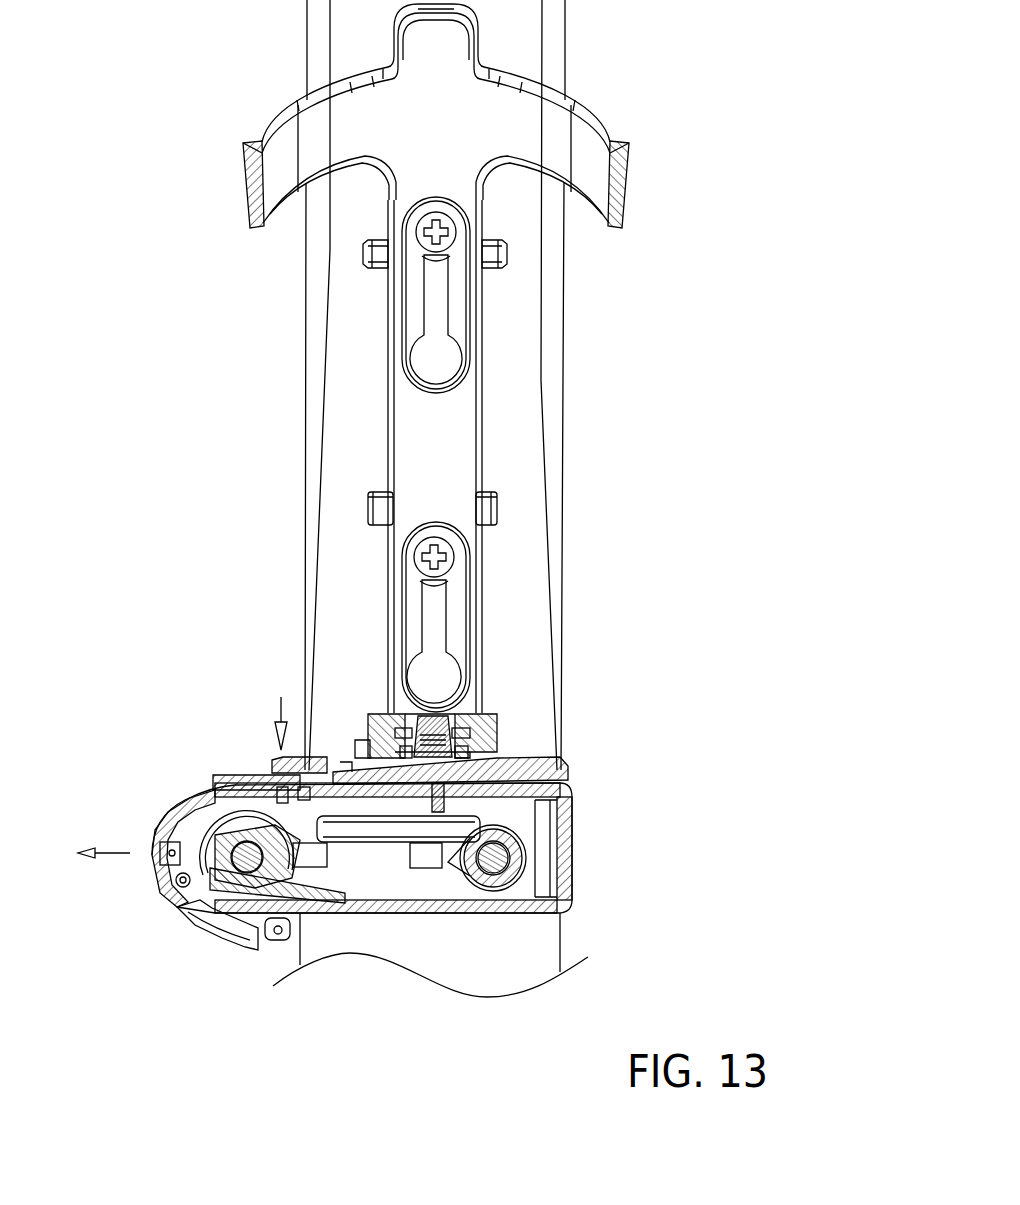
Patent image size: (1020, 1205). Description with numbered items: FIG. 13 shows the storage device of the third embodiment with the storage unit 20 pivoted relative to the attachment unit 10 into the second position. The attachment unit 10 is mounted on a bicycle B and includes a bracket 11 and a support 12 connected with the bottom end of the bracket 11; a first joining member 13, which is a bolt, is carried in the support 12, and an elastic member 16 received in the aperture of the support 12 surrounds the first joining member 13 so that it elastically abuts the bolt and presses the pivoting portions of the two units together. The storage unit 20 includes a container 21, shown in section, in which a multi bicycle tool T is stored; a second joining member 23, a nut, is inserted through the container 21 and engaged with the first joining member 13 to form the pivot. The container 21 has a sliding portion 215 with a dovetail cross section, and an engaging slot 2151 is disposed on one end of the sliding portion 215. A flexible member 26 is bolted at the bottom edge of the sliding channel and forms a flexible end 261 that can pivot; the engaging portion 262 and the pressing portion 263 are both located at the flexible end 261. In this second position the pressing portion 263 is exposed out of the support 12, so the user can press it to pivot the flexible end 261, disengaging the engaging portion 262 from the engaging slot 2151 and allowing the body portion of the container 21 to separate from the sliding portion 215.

The attachment unit 10 is at (645, 100).
The bicycle B is at (528, 405).
The bracket 11 is at (403, 438).
The first joining member 13 is at (470, 697).
The support 12 is at (497, 740).
The second joining member 23 is at (490, 735).
The sliding portion 215 is at (548, 772).
The flexible member 26 is at (520, 783).
The flexible end 261 is at (266, 800).
The elastic member 16 is at (362, 750).
The engaging slot 2151 is at (349, 770).
The engaging portion 262 is at (362, 768).
The pressing portion 263 is at (284, 750).
The storage unit 20 is at (410, 868).
The container 21 is at (600, 866).
The multi bicycle tool T is at (190, 897).